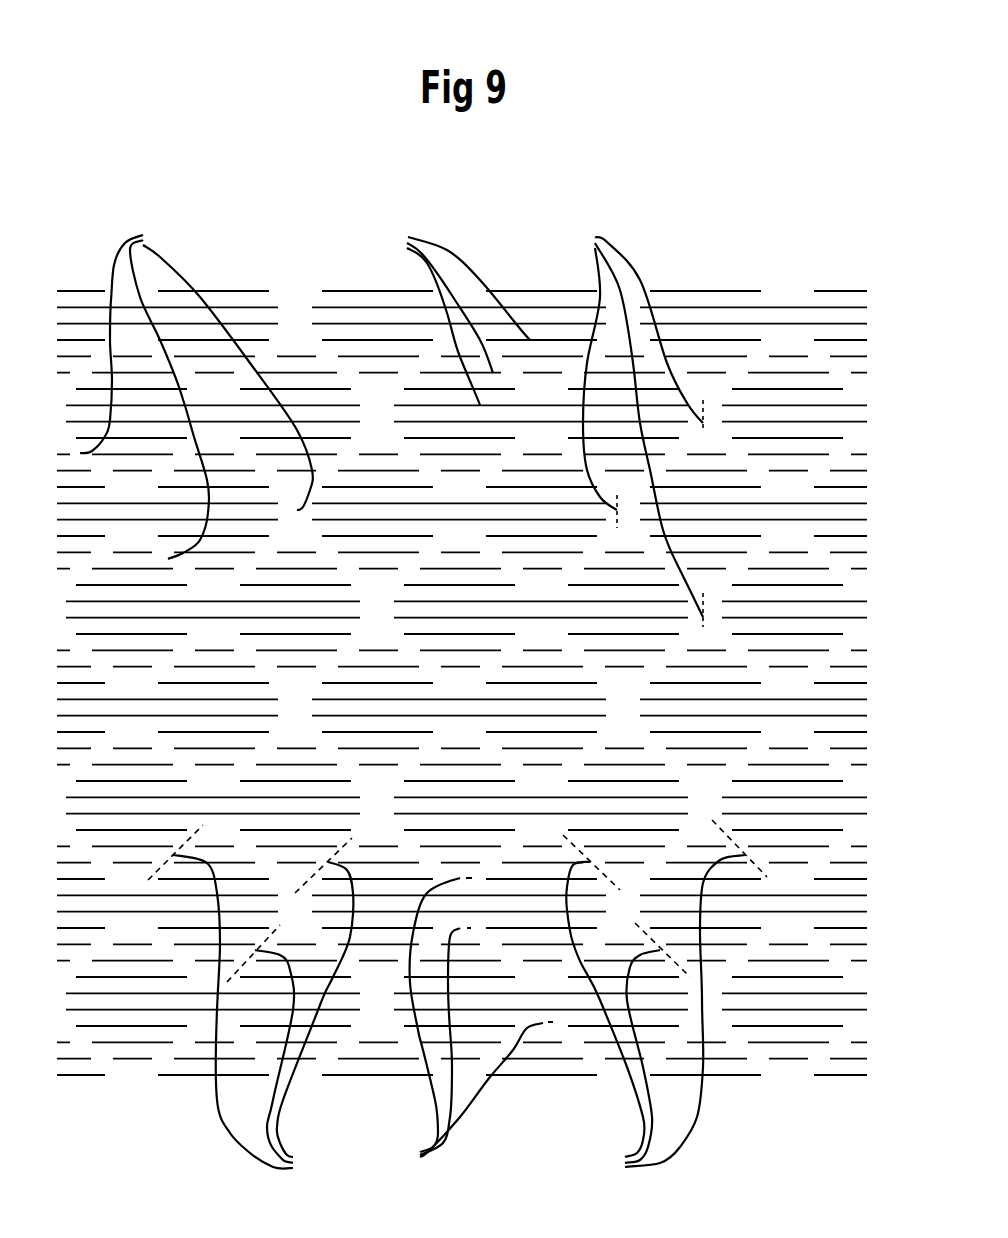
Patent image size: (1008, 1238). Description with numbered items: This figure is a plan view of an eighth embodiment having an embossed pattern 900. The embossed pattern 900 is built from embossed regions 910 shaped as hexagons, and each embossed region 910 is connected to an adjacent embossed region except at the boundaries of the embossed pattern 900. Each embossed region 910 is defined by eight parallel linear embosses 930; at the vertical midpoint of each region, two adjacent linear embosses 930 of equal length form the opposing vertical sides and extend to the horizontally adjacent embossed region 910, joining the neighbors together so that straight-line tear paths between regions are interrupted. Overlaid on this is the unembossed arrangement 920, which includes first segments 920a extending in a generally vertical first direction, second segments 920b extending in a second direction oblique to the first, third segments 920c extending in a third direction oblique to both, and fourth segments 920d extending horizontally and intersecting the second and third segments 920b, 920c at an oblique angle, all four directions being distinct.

The embossed pattern 900 is at (785, 173).
The embossed region 910 is at (345, 315).
The unembossed arrangement 920 is at (196, 394).
The first segment 920a is at (625, 429).
The second segment 920b is at (250, 1000).
The third segment 920c is at (665, 995).
The fourth segment 920d is at (466, 1021).
The linear emboss 930 is at (451, 318).